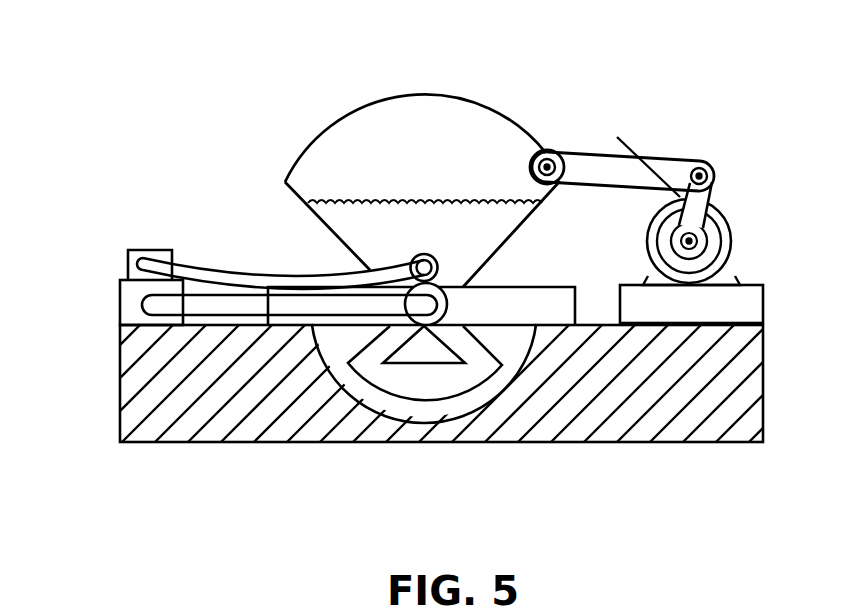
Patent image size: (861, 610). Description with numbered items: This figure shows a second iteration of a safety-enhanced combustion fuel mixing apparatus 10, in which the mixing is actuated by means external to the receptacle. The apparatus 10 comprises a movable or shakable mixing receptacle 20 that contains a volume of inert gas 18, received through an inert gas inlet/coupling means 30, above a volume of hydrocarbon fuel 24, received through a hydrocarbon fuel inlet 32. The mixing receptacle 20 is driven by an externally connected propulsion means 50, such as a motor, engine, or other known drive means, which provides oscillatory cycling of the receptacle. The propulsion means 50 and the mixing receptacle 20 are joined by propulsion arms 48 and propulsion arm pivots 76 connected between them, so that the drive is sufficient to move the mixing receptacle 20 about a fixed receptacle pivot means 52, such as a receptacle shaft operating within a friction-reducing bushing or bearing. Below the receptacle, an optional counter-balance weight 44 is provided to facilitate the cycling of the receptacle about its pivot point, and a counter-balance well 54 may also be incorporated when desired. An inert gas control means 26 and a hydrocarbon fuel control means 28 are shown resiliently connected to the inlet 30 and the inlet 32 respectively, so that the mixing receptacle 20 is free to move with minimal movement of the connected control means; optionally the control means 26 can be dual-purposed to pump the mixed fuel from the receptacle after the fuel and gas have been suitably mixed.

The mixing apparatus 10 is at (215, 112).
The inert gas 18 is at (472, 143).
The mixing receptacle 20 is at (342, 108).
The hydrocarbon fuel 24 is at (472, 231).
The inert gas control means 26 is at (217, 307).
The hydrocarbon fuel control means 28 is at (290, 277).
The inert gas inlet/coupling means 30 is at (412, 258).
The hydrocarbon fuel inlet 32 is at (426, 308).
The counter-balance weight 44 is at (438, 385).
The propulsion arms 48 is at (611, 170).
The propulsion means 50 is at (713, 247).
The receptacle pivot means 52 is at (445, 303).
The counter-balance well 54 is at (498, 395).
The propulsion arm pivots 76 is at (547, 150).